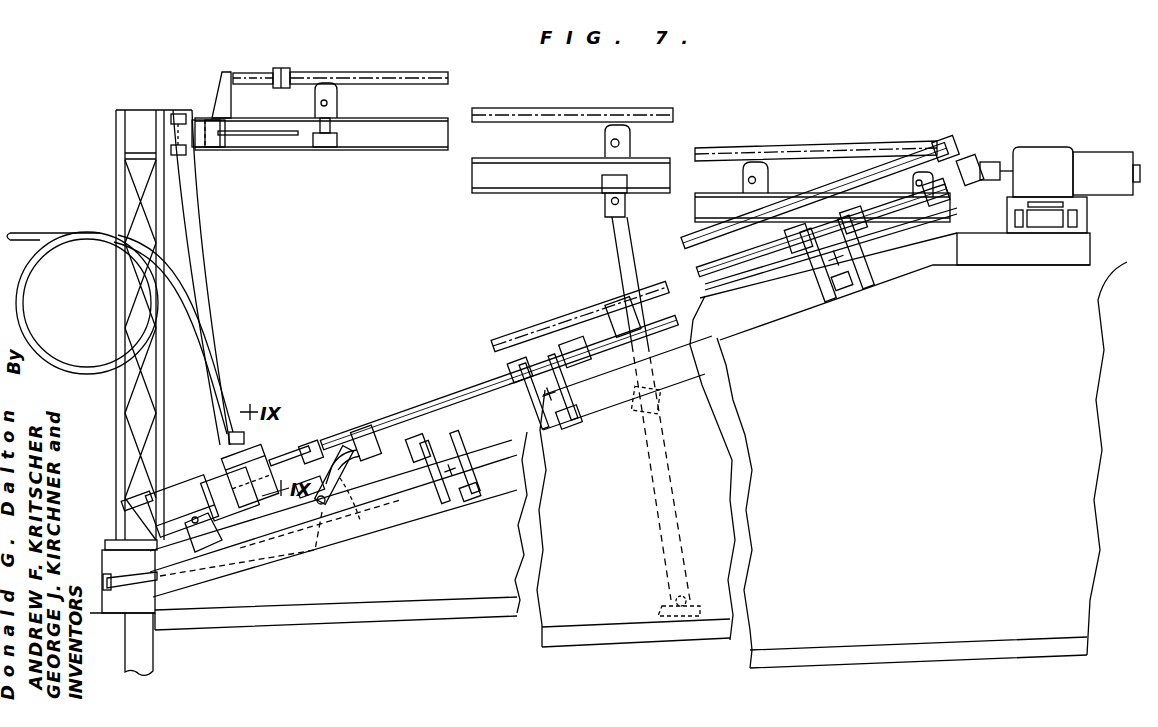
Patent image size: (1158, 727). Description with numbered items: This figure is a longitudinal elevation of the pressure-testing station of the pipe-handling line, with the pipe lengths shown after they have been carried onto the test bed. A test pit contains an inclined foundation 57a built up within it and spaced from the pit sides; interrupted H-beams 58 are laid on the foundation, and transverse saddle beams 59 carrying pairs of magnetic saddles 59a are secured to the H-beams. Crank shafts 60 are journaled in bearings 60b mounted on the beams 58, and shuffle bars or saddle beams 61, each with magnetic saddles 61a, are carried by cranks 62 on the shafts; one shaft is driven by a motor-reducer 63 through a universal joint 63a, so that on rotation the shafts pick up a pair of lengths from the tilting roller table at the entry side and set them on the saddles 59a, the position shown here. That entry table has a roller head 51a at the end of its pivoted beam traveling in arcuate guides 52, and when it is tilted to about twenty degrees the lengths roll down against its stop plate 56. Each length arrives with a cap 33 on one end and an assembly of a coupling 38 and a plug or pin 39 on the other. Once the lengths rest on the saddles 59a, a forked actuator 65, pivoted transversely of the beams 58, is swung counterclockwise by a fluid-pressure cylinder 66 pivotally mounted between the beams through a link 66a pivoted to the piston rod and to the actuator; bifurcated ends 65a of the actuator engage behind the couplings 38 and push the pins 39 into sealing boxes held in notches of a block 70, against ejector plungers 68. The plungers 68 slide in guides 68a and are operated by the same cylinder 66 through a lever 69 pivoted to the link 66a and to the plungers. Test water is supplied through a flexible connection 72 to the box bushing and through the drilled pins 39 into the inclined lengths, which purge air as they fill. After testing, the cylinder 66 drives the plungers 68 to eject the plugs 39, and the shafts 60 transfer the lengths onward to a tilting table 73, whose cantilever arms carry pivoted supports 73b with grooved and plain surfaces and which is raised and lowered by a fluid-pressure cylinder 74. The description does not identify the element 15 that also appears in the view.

The guide rail 15 is at (411, 72).
The cap 33 is at (940, 142).
The coupling 38 is at (313, 443).
The plug or pin 39 is at (246, 74).
The roller head 51a is at (200, 148).
The arcuate guides 52 is at (196, 224).
The stop plate 56 is at (235, 88).
The inclined foundation 57a is at (1080, 250).
The interrupted H-beams 58 is at (716, 302).
The transverse saddle beams 59 is at (412, 448).
The magnetic saddles 59a is at (370, 428).
The crank shafts 60 is at (700, 269).
The bearings 60b is at (800, 228).
The shuffle bars or saddle beams 61 is at (560, 380).
The magnetic saddles 61a is at (458, 449).
The cranks 62 is at (572, 427).
The motor-reducer 63 is at (1050, 147).
The universal joint 63a is at (972, 158).
The forked actuator 65 is at (340, 482).
The bifurcated ends 65a is at (354, 448).
The fluid-pressure cylinder 66 is at (122, 578).
The link 66a is at (275, 560).
The ejector plungers 68 is at (158, 494).
The guides 68a is at (150, 505).
The lever 69 is at (236, 462).
The block 70 is at (304, 495).
The flexible connection 72 is at (221, 379).
The tilting table 73 is at (411, 151).
The supports 73b is at (340, 98).
The fluid-pressure cylinder 74 is at (652, 498).